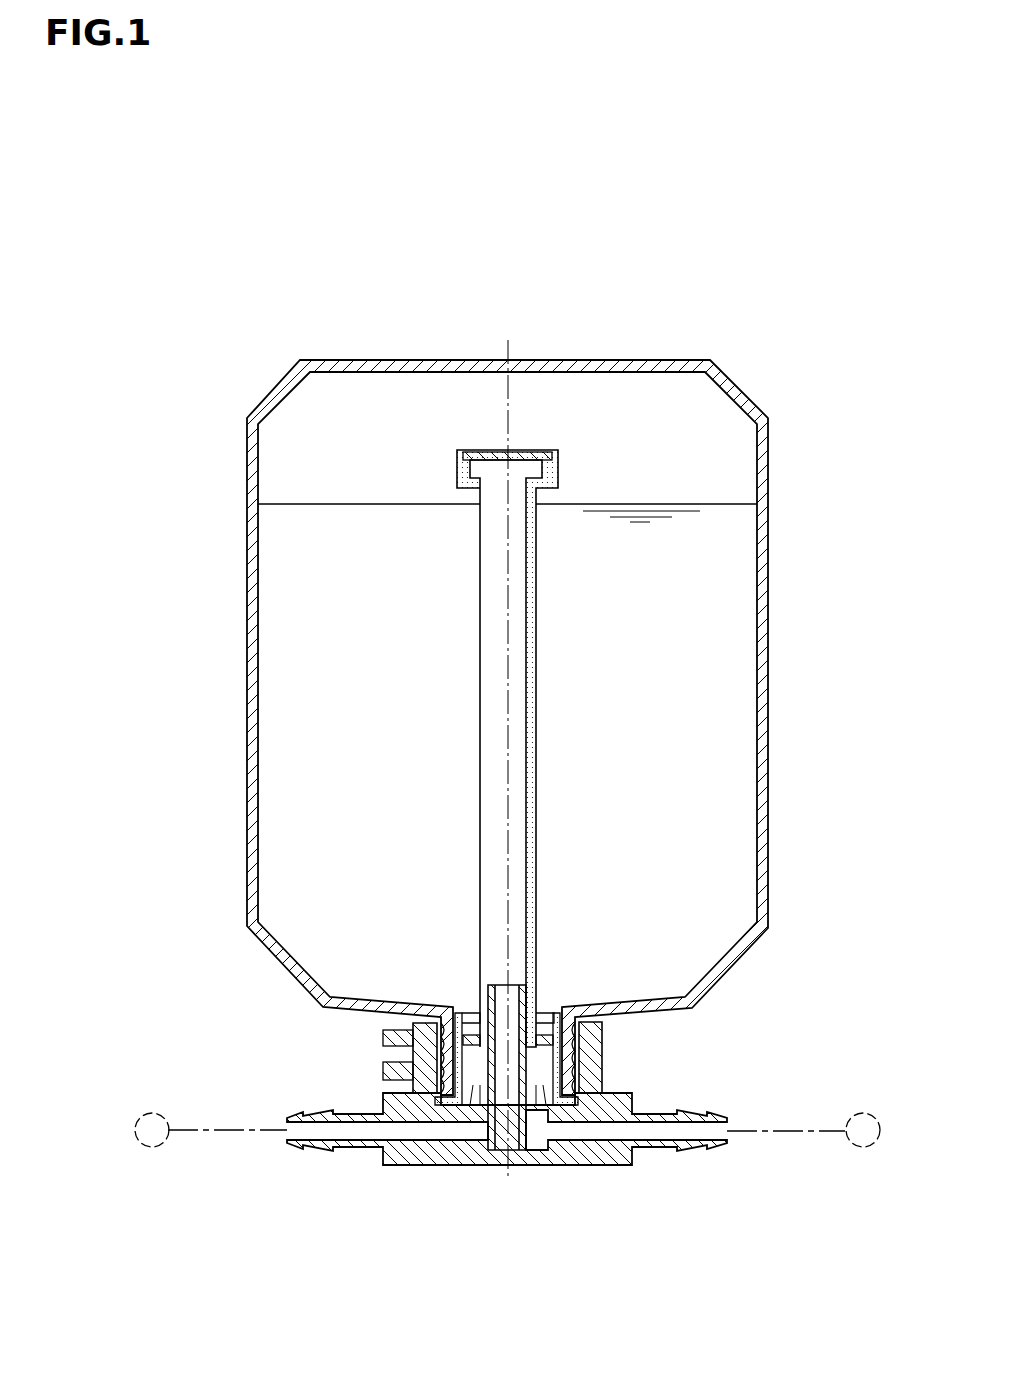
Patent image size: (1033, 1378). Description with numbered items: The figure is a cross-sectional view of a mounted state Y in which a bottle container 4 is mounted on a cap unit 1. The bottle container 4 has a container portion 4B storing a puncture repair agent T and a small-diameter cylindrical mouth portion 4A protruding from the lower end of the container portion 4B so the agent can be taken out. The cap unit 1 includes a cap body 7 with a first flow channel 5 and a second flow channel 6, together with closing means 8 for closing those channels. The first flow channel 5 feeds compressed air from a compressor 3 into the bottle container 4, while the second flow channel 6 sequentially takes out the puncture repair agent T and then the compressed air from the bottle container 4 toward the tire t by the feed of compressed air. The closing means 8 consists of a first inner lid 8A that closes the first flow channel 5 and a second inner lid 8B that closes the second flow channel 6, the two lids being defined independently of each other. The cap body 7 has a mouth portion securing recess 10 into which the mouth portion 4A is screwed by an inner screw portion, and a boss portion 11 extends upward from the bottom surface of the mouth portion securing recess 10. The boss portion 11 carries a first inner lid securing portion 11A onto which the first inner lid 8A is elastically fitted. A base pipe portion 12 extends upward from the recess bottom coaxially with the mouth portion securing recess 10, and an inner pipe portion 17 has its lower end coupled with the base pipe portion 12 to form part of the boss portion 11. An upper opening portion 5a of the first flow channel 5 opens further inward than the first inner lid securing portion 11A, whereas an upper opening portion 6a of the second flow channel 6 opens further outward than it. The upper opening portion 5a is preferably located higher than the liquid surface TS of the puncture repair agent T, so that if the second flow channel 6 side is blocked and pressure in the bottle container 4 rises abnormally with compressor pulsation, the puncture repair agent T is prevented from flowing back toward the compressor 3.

The cap unit 1 is at (496, 1150).
The compressor 3 is at (150, 1113).
The bottle container 4 is at (414, 727).
The mouth portion 4A is at (440, 1052).
The container portion 4B is at (253, 845).
The first flow channel 5 is at (425, 1133).
The upper opening portion of the first flow channel 5a is at (500, 478).
The second flow channel 6 is at (573, 1133).
The upper opening portion of the second flow channel 6a is at (470, 1007).
The cap body 7 is at (536, 1165).
The closing means 8 is at (561, 622).
The first inner lid 8A is at (532, 453).
The second inner lid 8B is at (548, 1040).
The mouth portion securing recess 10 is at (440, 1090).
The boss portion 11 is at (343, 699).
The first inner lid securing portion 11A is at (499, 477).
The base pipe portion 12 is at (490, 990).
The inner pipe portion 17 is at (368, 648).
The puncture repair agent T is at (660, 687).
The liquid surface TS is at (722, 504).
The mounted state Y is at (785, 670).
The tire t is at (862, 1112).